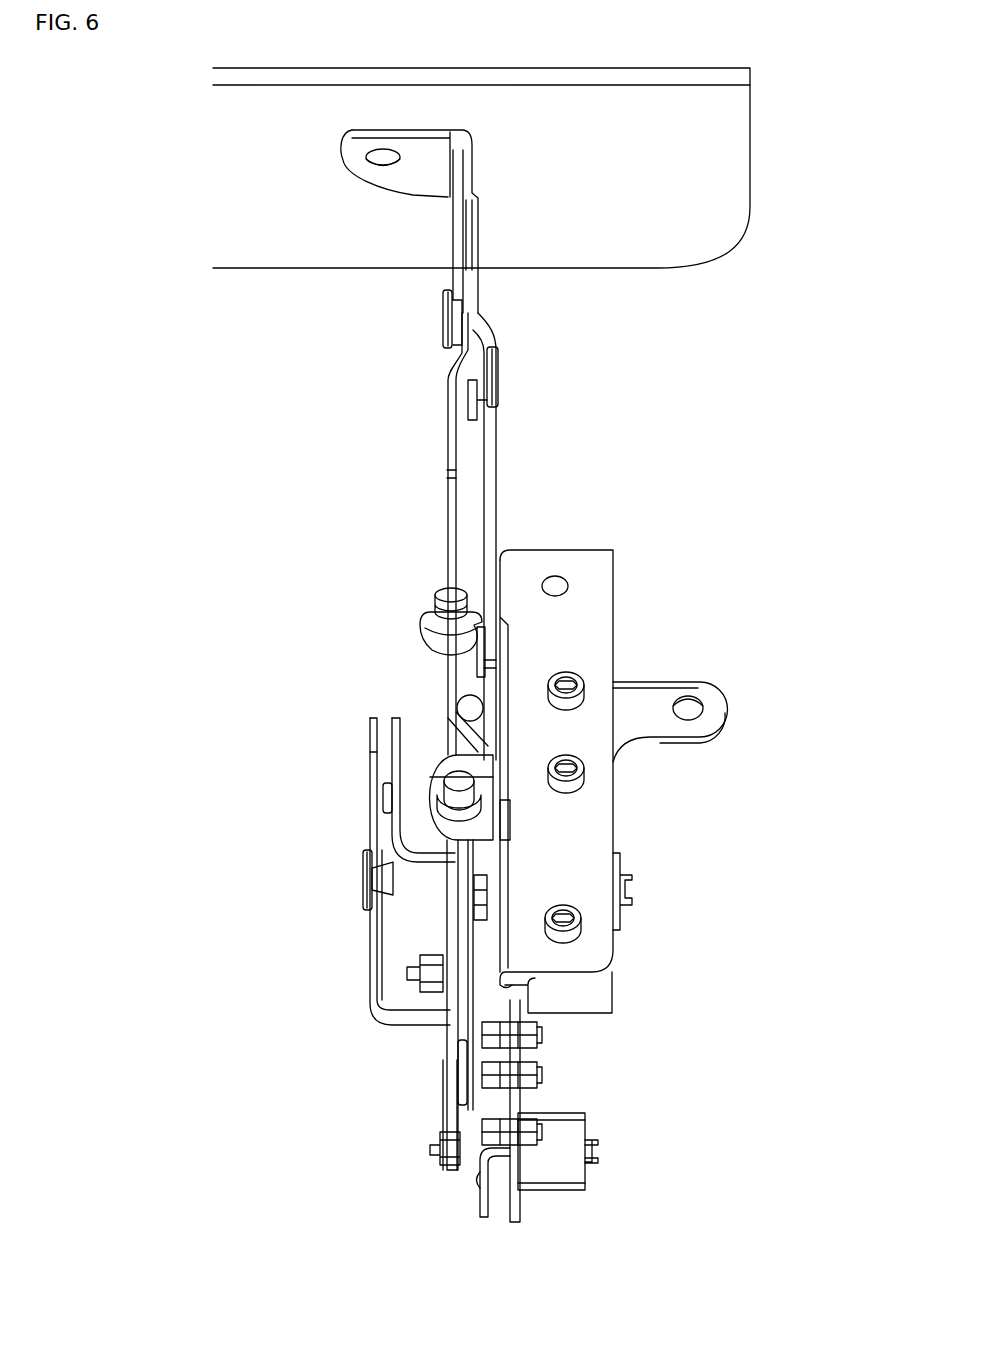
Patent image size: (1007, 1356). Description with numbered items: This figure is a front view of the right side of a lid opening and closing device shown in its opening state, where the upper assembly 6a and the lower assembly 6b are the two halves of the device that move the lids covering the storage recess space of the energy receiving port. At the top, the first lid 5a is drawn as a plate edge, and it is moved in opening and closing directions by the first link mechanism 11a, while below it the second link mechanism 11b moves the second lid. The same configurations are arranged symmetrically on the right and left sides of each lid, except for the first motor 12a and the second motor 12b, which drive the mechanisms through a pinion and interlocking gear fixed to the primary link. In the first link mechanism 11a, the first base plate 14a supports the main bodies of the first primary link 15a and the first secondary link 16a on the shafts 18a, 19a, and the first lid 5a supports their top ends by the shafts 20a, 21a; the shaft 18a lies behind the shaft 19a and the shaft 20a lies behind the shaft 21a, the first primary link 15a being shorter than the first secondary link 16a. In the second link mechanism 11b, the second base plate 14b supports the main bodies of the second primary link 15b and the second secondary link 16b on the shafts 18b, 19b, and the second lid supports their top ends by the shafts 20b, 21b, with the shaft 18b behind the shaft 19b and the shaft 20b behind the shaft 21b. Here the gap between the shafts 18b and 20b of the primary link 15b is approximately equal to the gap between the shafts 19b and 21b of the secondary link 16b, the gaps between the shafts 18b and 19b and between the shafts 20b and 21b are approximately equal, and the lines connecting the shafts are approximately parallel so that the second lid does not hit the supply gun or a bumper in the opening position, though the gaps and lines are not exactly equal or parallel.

The first lid 5a is at (688, 255).
The opening and closing device (first side) 6a is at (585, 511).
The opening and closing device (second side) 6b is at (307, 990).
The first link mechanism 11a is at (433, 453).
The second link mechanism 11b is at (355, 948).
The first motor 12a is at (632, 905).
The second motor 12b is at (585, 1192).
The first base plate 14a is at (603, 996).
The second base plate 14b is at (463, 1170).
The first primary link 15a is at (497, 443).
The second primary link 15b is at (394, 718).
The first secondary link 16a is at (452, 530).
The second secondary link 16b is at (370, 718).
The shaft 18a is at (480, 665).
The shaft 18b is at (473, 997).
The shaft 19a is at (510, 833).
The shaft 19b is at (473, 1080).
The shaft 20a is at (505, 383).
The shaft 20b is at (384, 798).
The shaft 21a is at (443, 318).
The shaft 21b is at (363, 868).